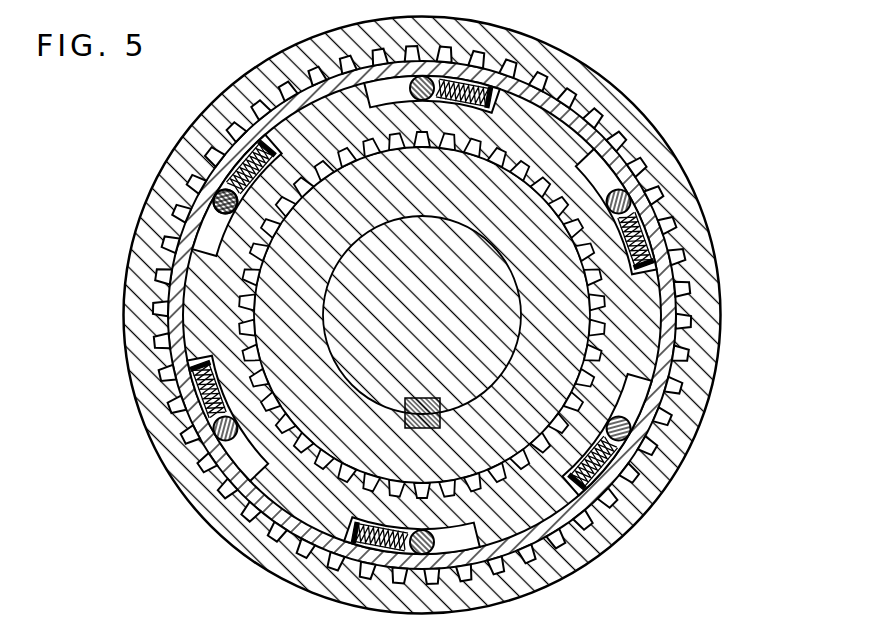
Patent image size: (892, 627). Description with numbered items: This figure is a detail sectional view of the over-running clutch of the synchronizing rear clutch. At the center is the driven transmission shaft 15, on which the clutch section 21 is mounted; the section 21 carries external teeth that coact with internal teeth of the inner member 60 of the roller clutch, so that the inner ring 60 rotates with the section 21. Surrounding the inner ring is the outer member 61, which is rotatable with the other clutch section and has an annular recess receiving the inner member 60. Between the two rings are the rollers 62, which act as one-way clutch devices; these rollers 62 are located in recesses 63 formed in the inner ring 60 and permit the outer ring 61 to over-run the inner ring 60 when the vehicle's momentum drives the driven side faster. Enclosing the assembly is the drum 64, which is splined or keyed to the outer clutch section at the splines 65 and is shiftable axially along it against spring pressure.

The driven transmission shaft 15 is at (507, 325).
The clutch section 21 is at (313, 408).
The inner member 60 is at (187, 346).
The outer member 61 is at (646, 187).
The rollers 62 is at (212, 203).
The recesses 63 is at (205, 232).
The drum 64 is at (695, 413).
The splines 65 is at (690, 360).